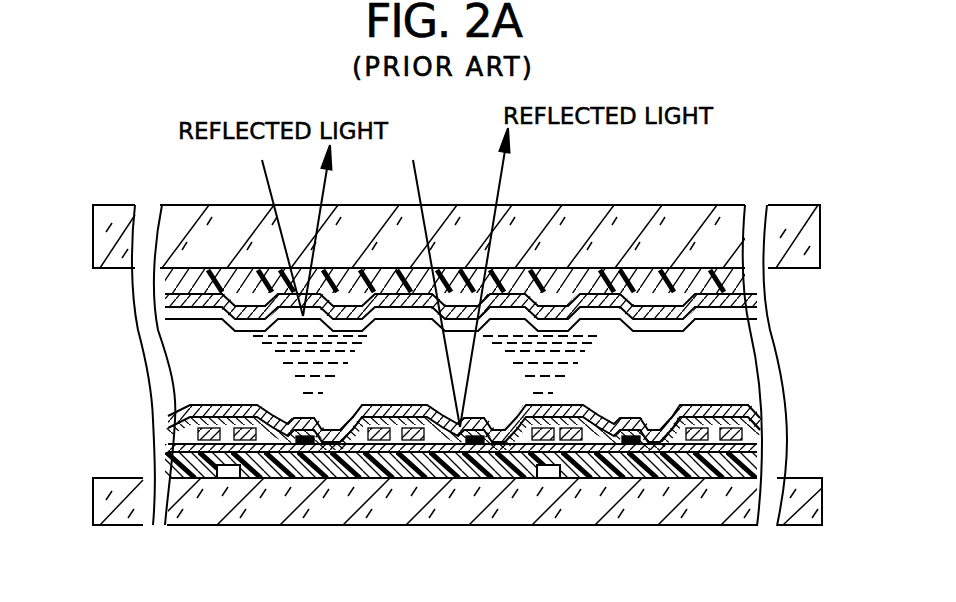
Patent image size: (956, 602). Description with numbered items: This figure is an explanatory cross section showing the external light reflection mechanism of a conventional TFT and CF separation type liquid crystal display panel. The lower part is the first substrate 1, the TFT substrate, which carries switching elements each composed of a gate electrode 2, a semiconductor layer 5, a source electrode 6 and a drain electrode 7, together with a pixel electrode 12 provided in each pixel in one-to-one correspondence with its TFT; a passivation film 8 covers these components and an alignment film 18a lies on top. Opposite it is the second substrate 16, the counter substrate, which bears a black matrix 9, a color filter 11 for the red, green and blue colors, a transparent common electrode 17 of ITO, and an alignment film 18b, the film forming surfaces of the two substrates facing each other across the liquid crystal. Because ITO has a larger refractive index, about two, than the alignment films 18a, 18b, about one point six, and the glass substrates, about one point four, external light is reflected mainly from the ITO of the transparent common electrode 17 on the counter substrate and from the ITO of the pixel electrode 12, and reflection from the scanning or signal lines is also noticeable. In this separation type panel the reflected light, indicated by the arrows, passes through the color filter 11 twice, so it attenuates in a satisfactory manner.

The first substrate 1 is at (667, 503).
The gate electrode 2 is at (219, 472).
The semiconductor layer 5 is at (263, 450).
The source electrode 6 is at (410, 447).
The drain electrode 7 is at (733, 428).
The passivation film 8 is at (710, 406).
The black matrix 9 is at (707, 283).
The color filter 11 is at (452, 282).
The pixel electrode 12 is at (470, 456).
The second substrate 16 is at (662, 234).
The transparent common electrode 17 is at (180, 292).
The alignment film 18a is at (590, 405).
The alignment film 18b is at (726, 320).